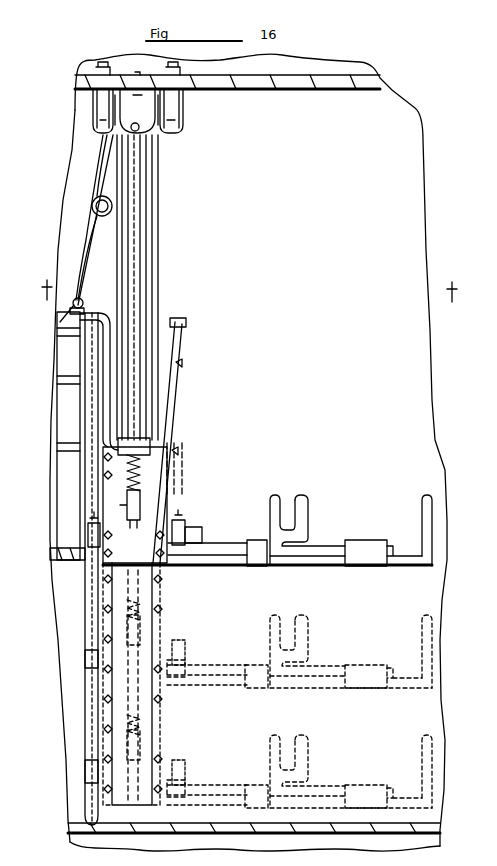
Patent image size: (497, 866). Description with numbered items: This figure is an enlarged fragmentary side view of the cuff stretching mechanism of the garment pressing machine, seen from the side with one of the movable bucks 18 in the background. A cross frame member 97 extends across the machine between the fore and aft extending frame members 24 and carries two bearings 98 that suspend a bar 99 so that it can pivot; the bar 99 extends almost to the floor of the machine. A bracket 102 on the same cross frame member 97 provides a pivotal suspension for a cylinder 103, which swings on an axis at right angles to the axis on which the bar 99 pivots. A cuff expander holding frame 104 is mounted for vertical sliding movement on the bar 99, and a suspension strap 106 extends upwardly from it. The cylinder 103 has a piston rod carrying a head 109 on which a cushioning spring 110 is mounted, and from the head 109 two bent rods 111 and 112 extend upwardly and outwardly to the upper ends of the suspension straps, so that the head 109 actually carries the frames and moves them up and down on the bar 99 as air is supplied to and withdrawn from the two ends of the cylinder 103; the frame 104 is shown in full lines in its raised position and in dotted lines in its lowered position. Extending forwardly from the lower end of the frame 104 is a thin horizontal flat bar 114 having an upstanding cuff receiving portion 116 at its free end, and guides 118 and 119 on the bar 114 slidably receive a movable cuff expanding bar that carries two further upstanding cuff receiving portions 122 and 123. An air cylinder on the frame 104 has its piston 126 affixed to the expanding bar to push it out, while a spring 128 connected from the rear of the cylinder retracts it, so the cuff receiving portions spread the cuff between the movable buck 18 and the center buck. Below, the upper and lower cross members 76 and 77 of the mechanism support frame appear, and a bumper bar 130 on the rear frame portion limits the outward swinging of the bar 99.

The buck 18 is at (248, 281).
The fore and aft extending member 24 is at (218, 68).
The upper cross member 76 is at (60, 330).
The lower cross member 77 is at (67, 565).
The cross frame member 97 is at (118, 75).
The bearing 98 is at (180, 128).
The bar 99 is at (156, 203).
The bracket 102 is at (152, 128).
The cylinder 103 is at (142, 240).
The cuff expander holding frame 104 is at (142, 520).
The suspension strap 106 is at (182, 323).
The head 109 is at (142, 497).
The cushioning spring 110 is at (130, 472).
The bent rod 111 is at (178, 399).
The bent rod 112 is at (170, 441).
The horizontal flat bar 114 is at (402, 568).
The upstanding cuff receiving portion 116 is at (424, 522).
The guide 118 is at (366, 568).
The guide 119 is at (259, 568).
The upstanding cuff receiving portion 122 is at (271, 497).
The upstanding cuff receiving portion 123 is at (301, 497).
The piston 126 is at (200, 535).
The spring 128 is at (190, 527).
The bumper bar 130 is at (108, 322).